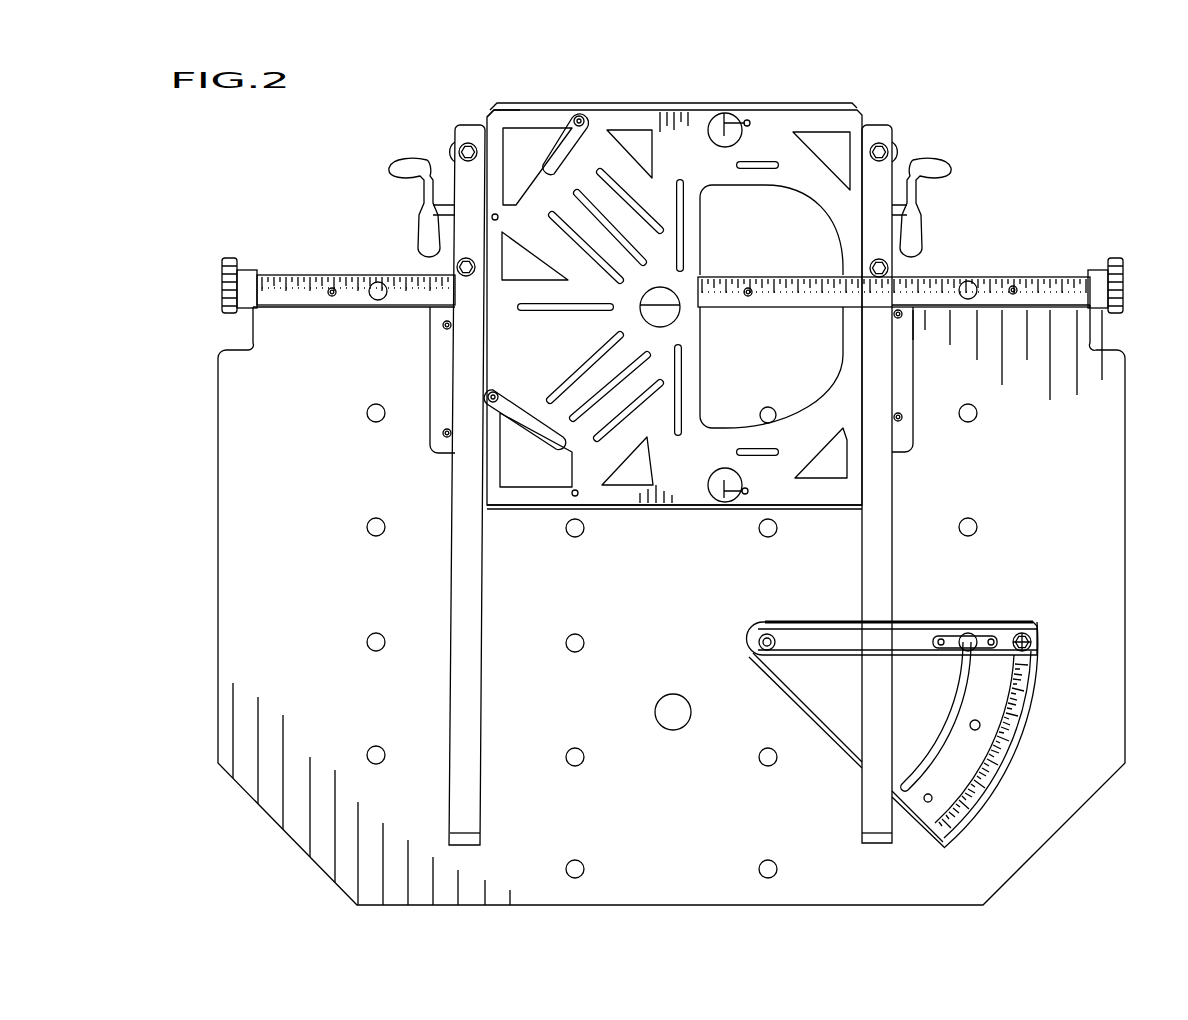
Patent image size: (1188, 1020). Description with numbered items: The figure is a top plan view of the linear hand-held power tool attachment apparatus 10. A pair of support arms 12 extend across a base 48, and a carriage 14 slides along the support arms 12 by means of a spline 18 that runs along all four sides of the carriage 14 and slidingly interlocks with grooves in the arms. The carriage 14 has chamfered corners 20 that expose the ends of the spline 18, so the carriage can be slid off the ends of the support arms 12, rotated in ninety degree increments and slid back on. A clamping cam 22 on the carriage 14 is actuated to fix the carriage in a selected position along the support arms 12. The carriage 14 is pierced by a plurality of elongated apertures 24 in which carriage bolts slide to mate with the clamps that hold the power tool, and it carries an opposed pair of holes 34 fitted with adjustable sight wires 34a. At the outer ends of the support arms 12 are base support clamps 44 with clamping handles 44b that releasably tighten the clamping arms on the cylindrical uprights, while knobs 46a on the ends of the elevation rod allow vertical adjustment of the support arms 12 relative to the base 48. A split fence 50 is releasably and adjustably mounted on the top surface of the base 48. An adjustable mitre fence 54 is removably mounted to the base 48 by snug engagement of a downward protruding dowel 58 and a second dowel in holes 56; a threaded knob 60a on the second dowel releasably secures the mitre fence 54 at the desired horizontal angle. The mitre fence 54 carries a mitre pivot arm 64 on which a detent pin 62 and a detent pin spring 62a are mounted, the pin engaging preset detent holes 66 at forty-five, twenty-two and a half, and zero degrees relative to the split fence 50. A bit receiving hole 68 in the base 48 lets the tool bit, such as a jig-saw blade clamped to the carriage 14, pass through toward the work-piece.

The apparatus 10 is at (1030, 115).
The support arms 12 is at (470, 215).
The carriage 14 is at (676, 160).
The spline 18 is at (540, 103).
The chamfered corners 20 is at (487, 114).
The clamping cam 22 is at (584, 116).
The elongated apertures 24 is at (684, 362).
The holes 34 is at (742, 126).
The sight wires 34a is at (743, 117).
The base support clamps 44 is at (440, 327).
The clamping handles 44b is at (423, 210).
The knobs 46a is at (228, 258).
The base 48 is at (350, 595).
The split fence 50 is at (303, 287).
The mitre fence 54 is at (990, 683).
The holes 56 is at (378, 285).
The dowel 58 is at (768, 636).
The threaded knob 60a is at (968, 633).
The detent pin 62 is at (1023, 632).
The detent pin spring 62a is at (940, 637).
The mitre pivot arm 64 is at (812, 646).
The detent holes 66 is at (980, 725).
The bit receiving hole 68 is at (662, 703).